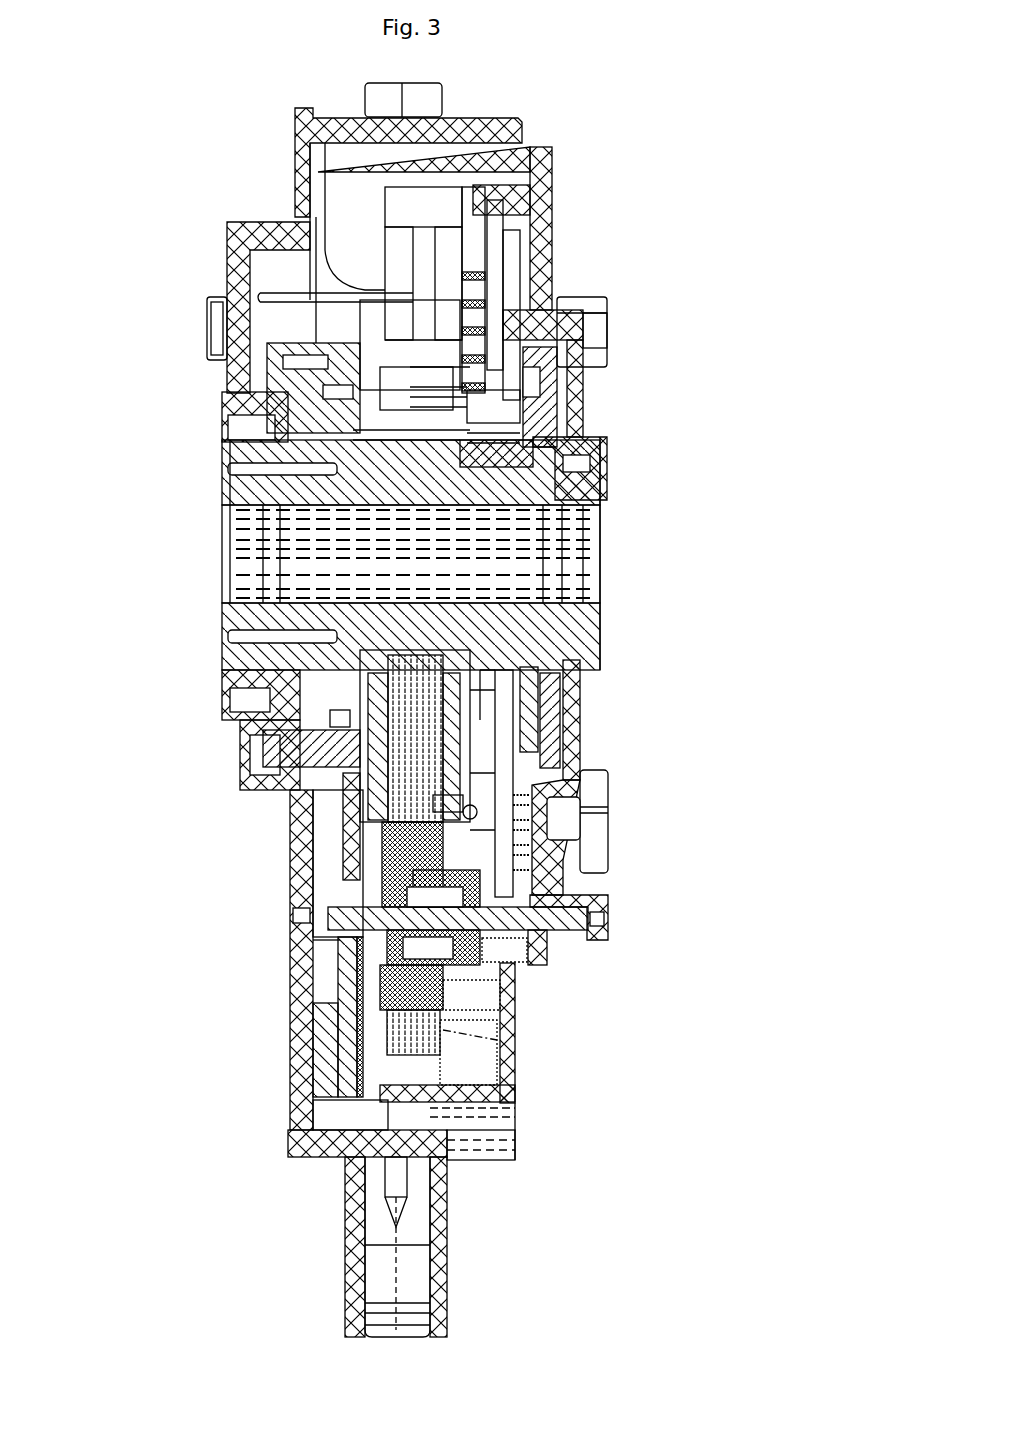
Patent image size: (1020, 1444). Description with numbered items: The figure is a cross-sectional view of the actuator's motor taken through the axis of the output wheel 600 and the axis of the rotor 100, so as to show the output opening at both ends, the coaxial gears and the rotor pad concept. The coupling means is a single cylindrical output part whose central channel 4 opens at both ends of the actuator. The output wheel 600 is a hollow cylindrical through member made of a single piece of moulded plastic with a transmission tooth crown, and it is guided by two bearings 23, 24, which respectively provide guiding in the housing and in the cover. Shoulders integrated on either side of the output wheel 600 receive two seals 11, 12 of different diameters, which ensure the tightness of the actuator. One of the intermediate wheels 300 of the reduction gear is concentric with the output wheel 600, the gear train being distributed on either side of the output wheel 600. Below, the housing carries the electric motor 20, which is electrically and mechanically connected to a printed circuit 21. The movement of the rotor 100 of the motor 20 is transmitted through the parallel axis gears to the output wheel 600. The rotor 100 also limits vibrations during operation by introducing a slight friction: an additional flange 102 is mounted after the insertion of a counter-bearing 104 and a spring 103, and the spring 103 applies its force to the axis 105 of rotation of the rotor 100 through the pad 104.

The seal 11 is at (262, 426).
The bearing 24 is at (315, 430).
The output wheel 600 is at (200, 548).
The seal 12 is at (562, 472).
The bearing 23 is at (507, 468).
The central channel 4 is at (543, 583).
The intermediate wheel 300 is at (543, 636).
The rotor 100 is at (400, 847).
The additional flange 102 is at (393, 885).
The axis of rotation 105 is at (477, 917).
The counter-bearing 104 is at (443, 937).
The spring 103 is at (440, 943).
The electric motor 20 is at (442, 1043).
The printed circuit 21 is at (353, 1055).